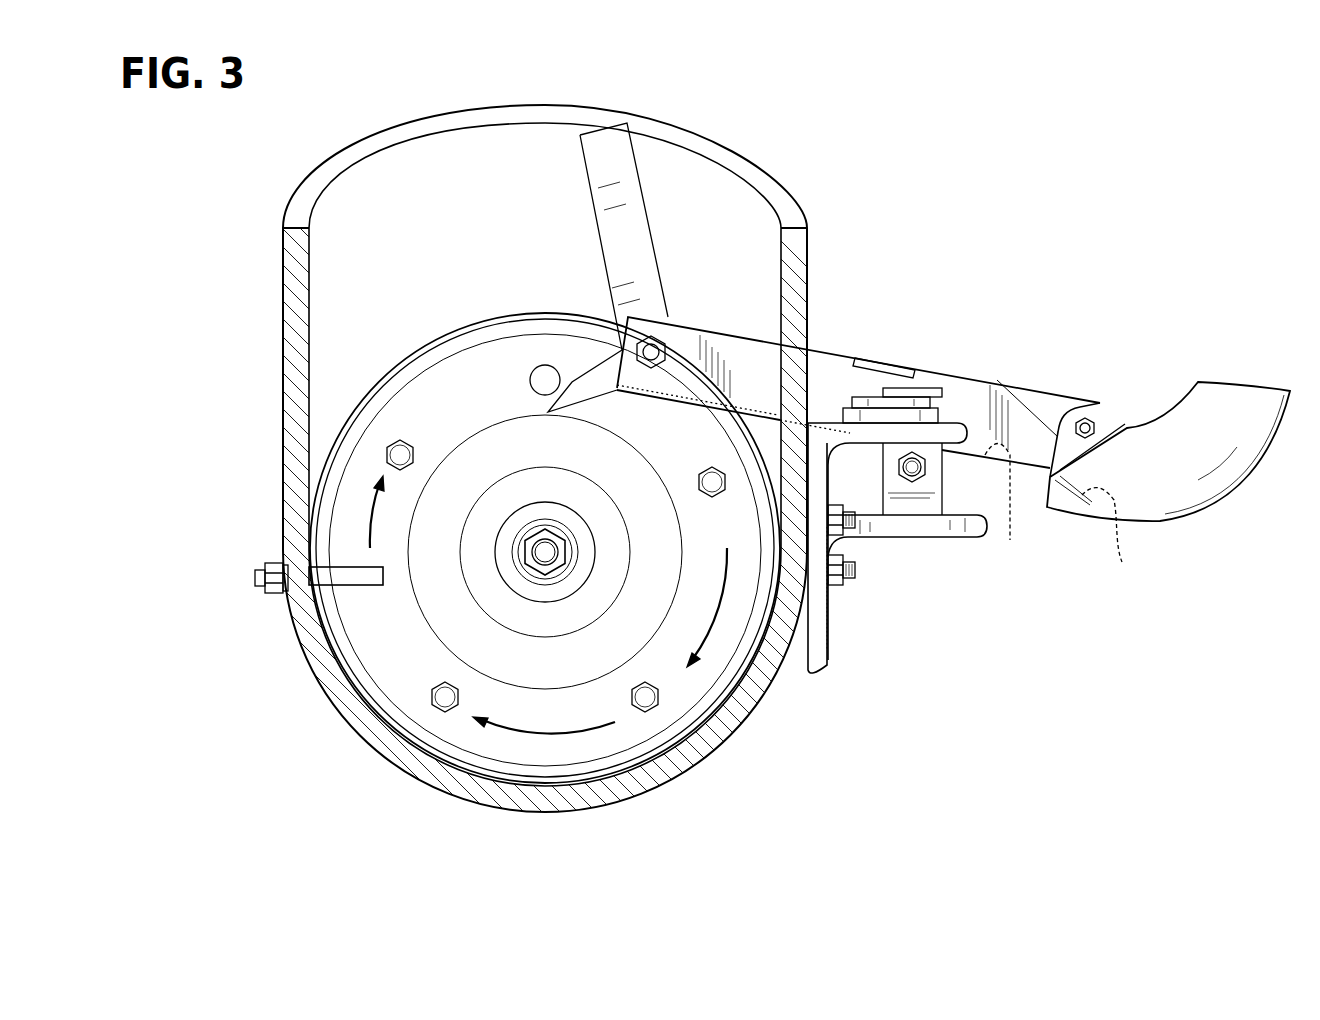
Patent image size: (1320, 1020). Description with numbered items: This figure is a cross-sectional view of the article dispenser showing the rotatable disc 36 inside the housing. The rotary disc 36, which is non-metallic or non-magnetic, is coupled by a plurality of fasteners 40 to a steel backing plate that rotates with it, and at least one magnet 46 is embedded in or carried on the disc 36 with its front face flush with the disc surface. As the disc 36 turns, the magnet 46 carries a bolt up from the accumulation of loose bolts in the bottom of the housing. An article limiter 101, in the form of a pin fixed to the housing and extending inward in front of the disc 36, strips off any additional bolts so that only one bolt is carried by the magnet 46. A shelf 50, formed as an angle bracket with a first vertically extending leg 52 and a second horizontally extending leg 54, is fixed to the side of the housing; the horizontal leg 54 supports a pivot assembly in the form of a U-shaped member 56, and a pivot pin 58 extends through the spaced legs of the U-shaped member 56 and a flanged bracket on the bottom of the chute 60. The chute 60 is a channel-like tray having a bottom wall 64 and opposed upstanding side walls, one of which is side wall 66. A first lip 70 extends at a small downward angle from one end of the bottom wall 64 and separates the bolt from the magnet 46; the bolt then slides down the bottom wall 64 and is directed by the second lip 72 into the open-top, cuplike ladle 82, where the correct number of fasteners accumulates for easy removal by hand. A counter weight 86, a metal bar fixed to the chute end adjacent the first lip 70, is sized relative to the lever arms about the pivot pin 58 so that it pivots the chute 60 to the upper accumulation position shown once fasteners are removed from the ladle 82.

The rotatable disc 36 is at (615, 737).
The fasteners 40 is at (398, 450).
The magnet 46 is at (540, 377).
The shelf 50 is at (828, 633).
The first vertically extending leg 52 is at (822, 660).
The second horizontally extending leg 54 is at (828, 418).
The U-shaped member 56 is at (940, 386).
The pivot pin 58 is at (908, 472).
The chute 60 is at (1143, 434).
The bottom wall 64 is at (1006, 509).
The side wall 66 is at (1060, 388).
The first lip 70 is at (589, 383).
The second lip 72 is at (1112, 538).
The ladle 82 is at (1247, 385).
The counter weight 86 is at (617, 158).
The article limiter 101 is at (357, 578).